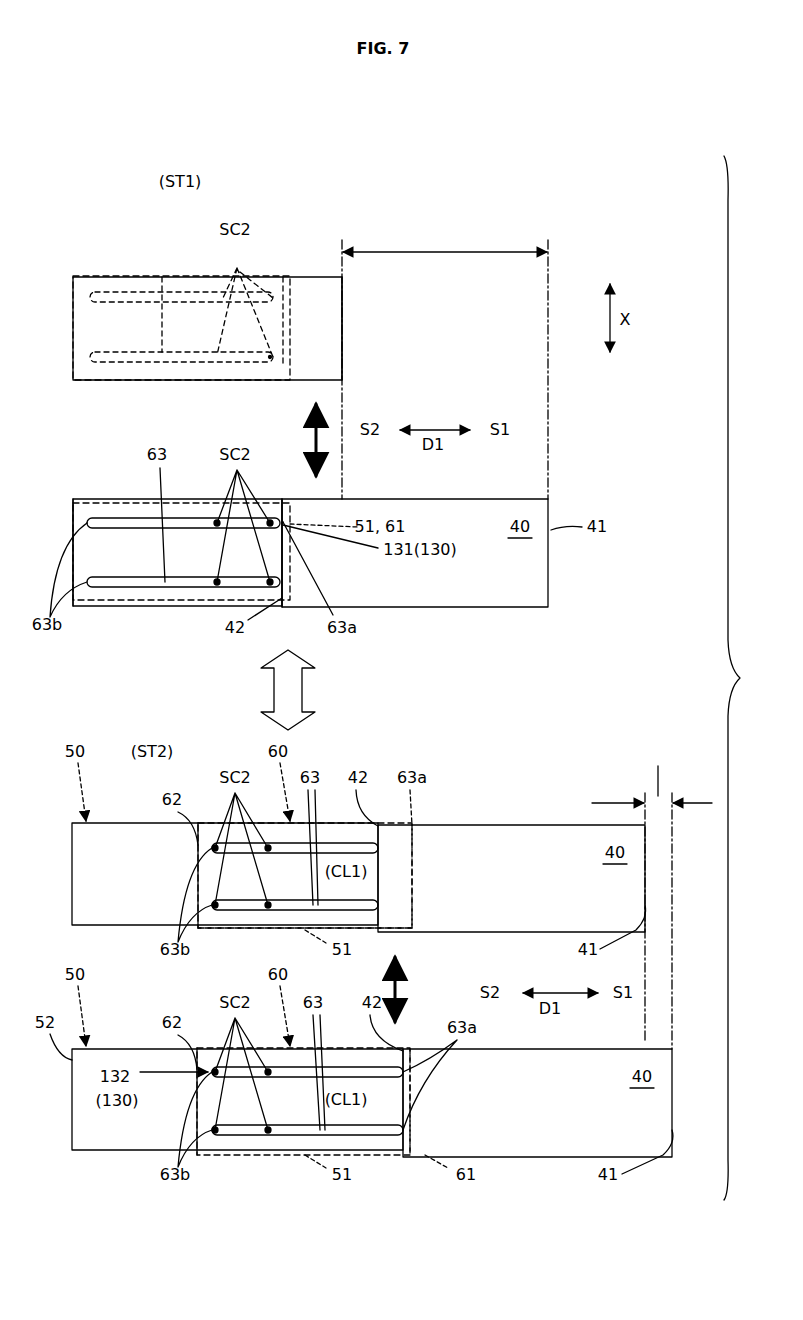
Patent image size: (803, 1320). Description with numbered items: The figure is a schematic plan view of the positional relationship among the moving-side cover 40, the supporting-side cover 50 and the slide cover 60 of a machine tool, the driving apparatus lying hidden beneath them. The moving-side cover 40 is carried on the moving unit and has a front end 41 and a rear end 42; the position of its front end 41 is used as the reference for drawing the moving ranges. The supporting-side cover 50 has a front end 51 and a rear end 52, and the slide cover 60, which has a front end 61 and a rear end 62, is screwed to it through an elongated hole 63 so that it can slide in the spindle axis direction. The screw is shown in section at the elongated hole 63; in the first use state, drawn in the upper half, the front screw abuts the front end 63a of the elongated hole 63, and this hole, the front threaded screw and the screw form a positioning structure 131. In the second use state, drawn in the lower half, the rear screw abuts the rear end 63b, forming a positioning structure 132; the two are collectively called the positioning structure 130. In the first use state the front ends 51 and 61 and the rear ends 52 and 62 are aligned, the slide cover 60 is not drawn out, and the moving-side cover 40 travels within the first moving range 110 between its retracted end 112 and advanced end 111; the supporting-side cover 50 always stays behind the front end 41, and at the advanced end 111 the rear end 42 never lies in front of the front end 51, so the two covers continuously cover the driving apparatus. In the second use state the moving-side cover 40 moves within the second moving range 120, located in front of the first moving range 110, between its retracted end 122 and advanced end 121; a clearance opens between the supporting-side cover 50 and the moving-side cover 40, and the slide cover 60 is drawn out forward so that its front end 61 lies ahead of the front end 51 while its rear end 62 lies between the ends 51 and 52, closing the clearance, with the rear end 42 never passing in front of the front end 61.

The moving-side cover 40 is at (303, 312).
The front end of the moving-side cover 41 is at (345, 307).
The rear end of the moving-side cover 42 is at (73, 295).
The supporting-side cover 50 is at (88, 496).
The front end of the supporting-side cover 51 is at (276, 356).
The rear end of the supporting-side cover 52 is at (72, 835).
The slide cover 60 is at (130, 496).
The front end of the slide cover 61 is at (425, 930).
The rear end of the slide cover 62 is at (73, 513).
The elongated hole 63 is at (161, 276).
The front end of the elongated hole 63a is at (283, 276).
The rear end of the elongated hole 63b is at (92, 356).
The first moving range 110 is at (445, 237).
The advanced end of the first moving range 111 is at (549, 360).
The retracted end of the first moving range 112 is at (345, 360).
The second moving range 120 is at (658, 770).
The advanced end of the second moving range 121 is at (691, 786).
The retracted end of the second moving range 122 is at (619, 786).
The positioning structure 130 is at (335, 446).
The positioning structure for the first use state 131 is at (285, 362).
The positioning structure for the second use state 132 is at (208, 848).